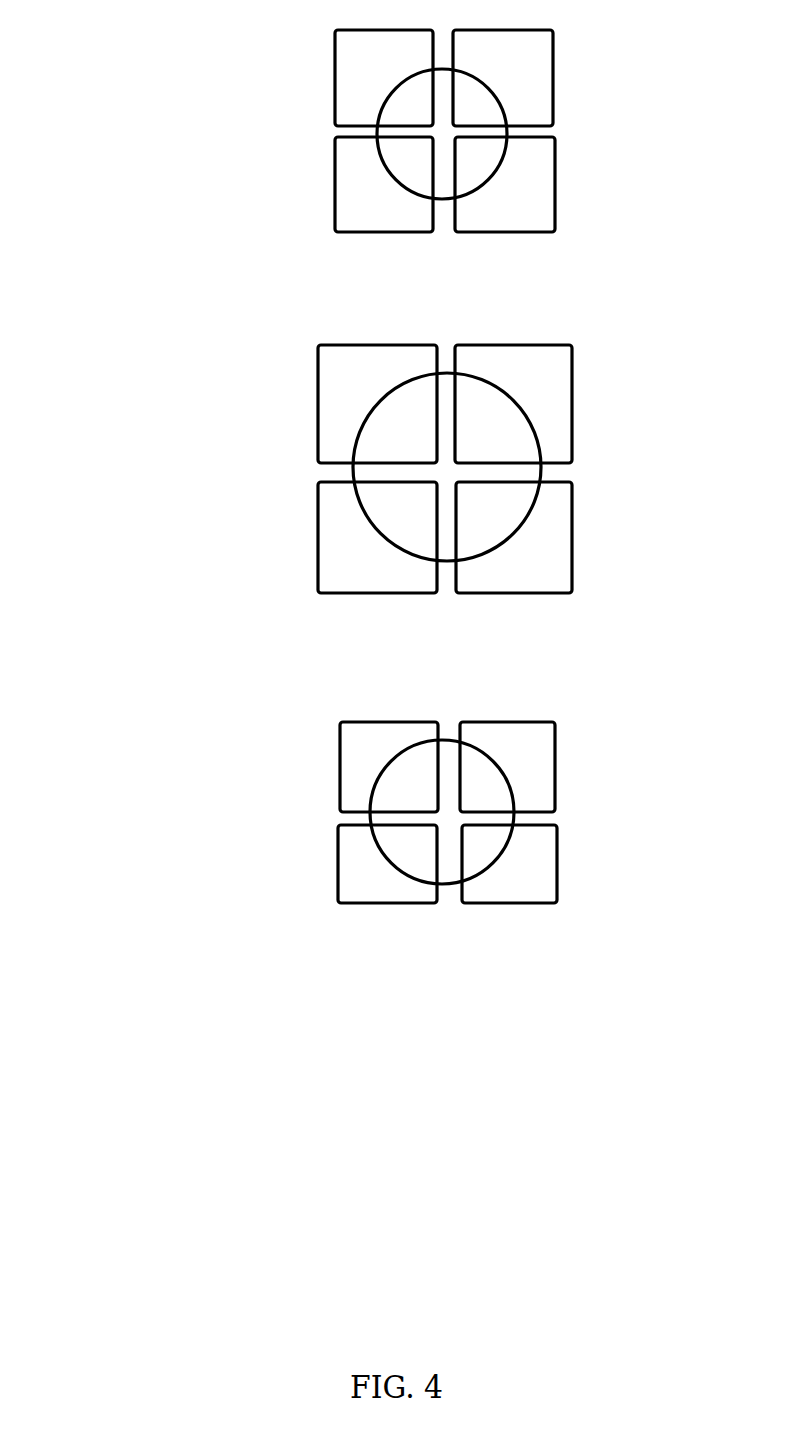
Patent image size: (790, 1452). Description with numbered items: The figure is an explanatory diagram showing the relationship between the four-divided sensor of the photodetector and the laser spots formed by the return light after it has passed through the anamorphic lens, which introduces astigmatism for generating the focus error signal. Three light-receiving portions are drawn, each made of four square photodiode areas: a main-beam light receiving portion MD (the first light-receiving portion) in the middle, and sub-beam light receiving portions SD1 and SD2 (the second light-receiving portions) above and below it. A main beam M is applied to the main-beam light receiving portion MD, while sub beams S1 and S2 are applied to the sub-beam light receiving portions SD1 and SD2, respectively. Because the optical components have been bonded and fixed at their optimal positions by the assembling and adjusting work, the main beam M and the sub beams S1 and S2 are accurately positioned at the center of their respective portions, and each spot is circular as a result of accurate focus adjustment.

The sub-beam light receiving portion SD1 is at (305, 150).
The sub beam S1 is at (500, 97).
The main-beam light receiving portion MD is at (283, 472).
The main beam M is at (528, 418).
The sub-beam light receiving portion SD2 is at (305, 817).
The sub beam S2 is at (512, 780).